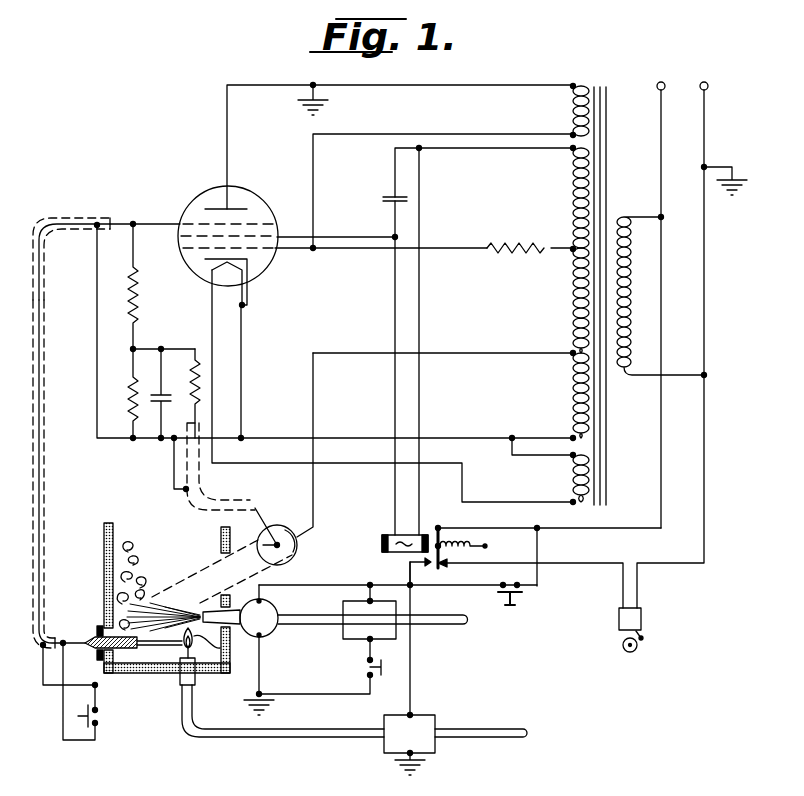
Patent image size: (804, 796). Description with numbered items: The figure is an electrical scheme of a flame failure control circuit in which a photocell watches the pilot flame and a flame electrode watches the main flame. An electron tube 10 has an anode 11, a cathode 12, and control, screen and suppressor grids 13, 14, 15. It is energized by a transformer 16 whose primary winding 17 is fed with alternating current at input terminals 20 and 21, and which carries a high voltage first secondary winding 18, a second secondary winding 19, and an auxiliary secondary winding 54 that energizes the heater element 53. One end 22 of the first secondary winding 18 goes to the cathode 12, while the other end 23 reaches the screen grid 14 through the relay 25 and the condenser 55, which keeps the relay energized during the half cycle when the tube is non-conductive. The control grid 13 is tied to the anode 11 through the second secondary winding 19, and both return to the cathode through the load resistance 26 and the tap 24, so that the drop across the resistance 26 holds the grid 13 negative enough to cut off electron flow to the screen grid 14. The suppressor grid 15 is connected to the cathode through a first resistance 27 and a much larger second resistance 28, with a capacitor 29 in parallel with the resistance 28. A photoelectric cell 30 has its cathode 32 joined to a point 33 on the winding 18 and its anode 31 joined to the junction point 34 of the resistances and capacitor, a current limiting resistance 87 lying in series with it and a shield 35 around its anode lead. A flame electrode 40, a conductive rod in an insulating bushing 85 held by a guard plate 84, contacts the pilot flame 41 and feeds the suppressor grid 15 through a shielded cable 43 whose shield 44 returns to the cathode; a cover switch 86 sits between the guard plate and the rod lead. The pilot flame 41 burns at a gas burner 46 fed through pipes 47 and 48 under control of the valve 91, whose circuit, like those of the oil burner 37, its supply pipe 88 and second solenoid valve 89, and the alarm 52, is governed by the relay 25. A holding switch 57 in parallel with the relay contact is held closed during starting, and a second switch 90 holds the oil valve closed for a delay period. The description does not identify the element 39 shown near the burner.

The electron tube 10 is at (216, 186).
The anode 11 is at (245, 206).
The cathode 12 is at (250, 266).
The control grid 13 is at (270, 249).
The screen grid 14 is at (272, 237).
The suppressor grid 15 is at (188, 222).
The transformer 16 is at (608, 130).
The primary winding 17 is at (630, 275).
The first secondary winding 18 is at (571, 288).
The second secondary winding 19 is at (580, 86).
The input terminal 20 is at (664, 82).
The input terminal 21 is at (707, 82).
The end of first secondary winding 22 is at (573, 432).
The other end of first secondary winding 23 is at (573, 150).
The tap 24 is at (573, 246).
The relay 25 is at (385, 535).
The load resistance 26 is at (525, 255).
The first resistance 27 is at (140, 290).
The second resistance 28 is at (130, 395).
The capacitor 29 is at (147, 410).
The photoelectric cell 30 is at (300, 528).
The photocell anode 31 is at (258, 536).
The photocell cathode 32 is at (298, 550).
The point on first secondary winding 33 is at (573, 355).
The junction point 34 is at (133, 349).
The shield 35 is at (184, 458).
The oil burner 37 is at (244, 604).
The fuel spray 39 is at (165, 608).
The flame electrode 40 is at (152, 645).
The flame 41 is at (228, 640).
The shielded cable 43 is at (36, 380).
The shield 44 is at (100, 217).
The gas burner 46 is at (197, 680).
The pipe 47 is at (478, 738).
The pipe 48 is at (236, 738).
The alarm 52 is at (642, 618).
The heater element 53 is at (212, 278).
The auxiliary secondary winding 54 is at (572, 470).
The capacitor 55 is at (383, 197).
The holding switch 57 is at (521, 600).
The conductive metal plate 84 is at (100, 630).
The insulating bushing 85 is at (118, 675).
The cover switch 86 is at (100, 716).
The current limiting resistance 87 is at (200, 395).
The pipe 88 is at (432, 627).
The second solenoid valve 89 is at (386, 600).
The second switch 90 is at (368, 672).
The valve 91 is at (424, 712).